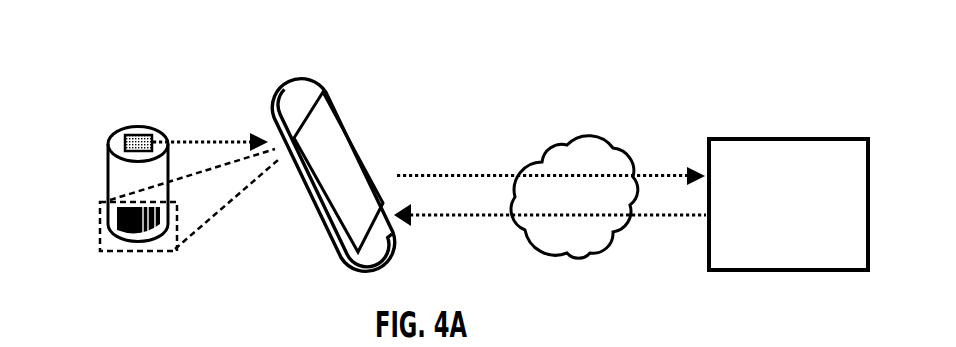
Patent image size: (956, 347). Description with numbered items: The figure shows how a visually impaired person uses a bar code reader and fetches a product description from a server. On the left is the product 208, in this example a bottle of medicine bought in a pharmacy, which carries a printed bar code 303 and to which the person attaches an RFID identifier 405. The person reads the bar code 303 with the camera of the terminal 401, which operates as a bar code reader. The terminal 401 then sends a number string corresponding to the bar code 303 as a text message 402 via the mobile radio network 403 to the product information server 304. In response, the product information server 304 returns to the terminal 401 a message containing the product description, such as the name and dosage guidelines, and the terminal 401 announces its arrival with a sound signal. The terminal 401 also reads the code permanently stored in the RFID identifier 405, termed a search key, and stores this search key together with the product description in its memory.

The RFID identifier 405 is at (139, 131).
The bar code 303 is at (116, 218).
The product 208 is at (139, 243).
The terminal 401 is at (303, 81).
The text message 402 is at (458, 173).
The mobile radio network 403 is at (587, 138).
The product information server 304 is at (733, 137).